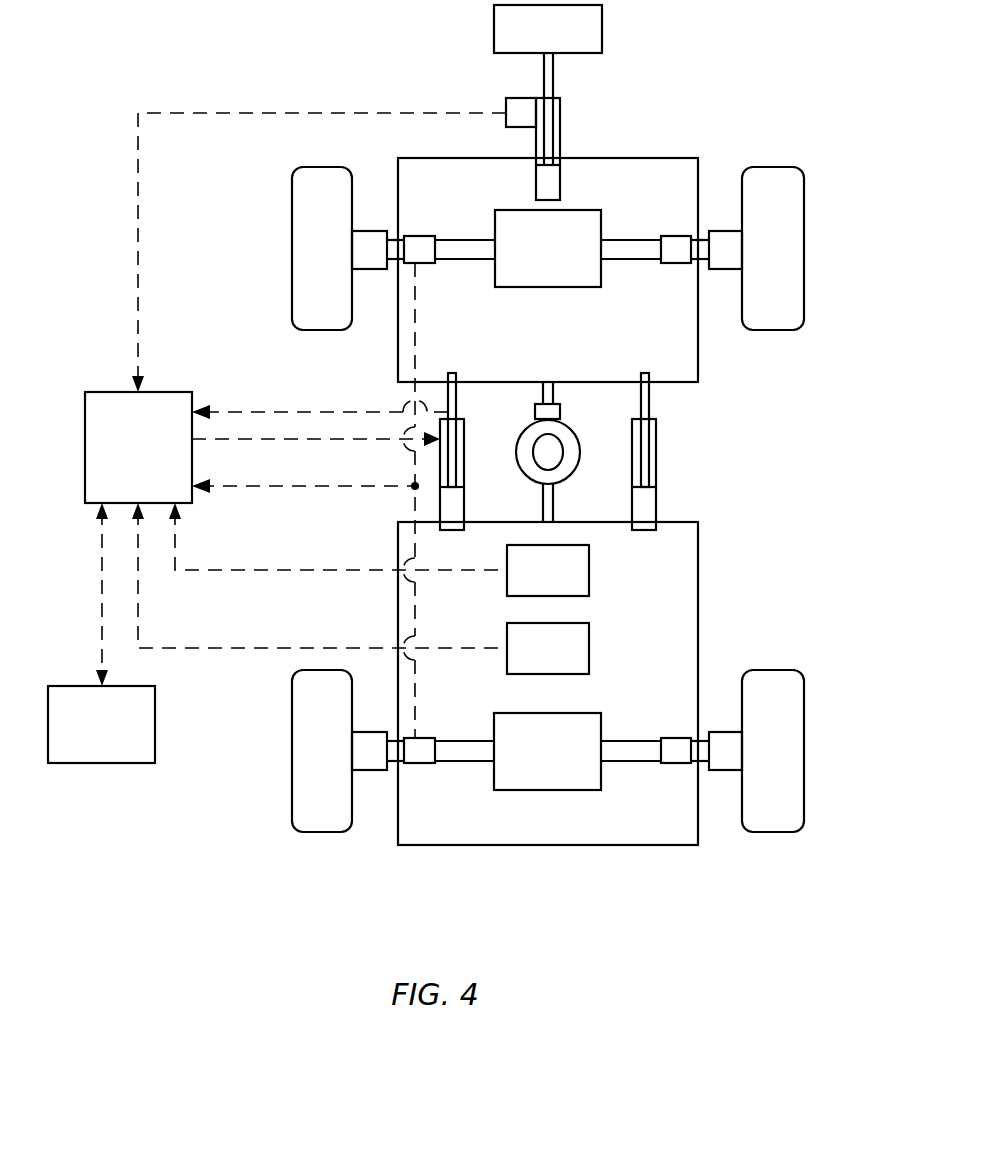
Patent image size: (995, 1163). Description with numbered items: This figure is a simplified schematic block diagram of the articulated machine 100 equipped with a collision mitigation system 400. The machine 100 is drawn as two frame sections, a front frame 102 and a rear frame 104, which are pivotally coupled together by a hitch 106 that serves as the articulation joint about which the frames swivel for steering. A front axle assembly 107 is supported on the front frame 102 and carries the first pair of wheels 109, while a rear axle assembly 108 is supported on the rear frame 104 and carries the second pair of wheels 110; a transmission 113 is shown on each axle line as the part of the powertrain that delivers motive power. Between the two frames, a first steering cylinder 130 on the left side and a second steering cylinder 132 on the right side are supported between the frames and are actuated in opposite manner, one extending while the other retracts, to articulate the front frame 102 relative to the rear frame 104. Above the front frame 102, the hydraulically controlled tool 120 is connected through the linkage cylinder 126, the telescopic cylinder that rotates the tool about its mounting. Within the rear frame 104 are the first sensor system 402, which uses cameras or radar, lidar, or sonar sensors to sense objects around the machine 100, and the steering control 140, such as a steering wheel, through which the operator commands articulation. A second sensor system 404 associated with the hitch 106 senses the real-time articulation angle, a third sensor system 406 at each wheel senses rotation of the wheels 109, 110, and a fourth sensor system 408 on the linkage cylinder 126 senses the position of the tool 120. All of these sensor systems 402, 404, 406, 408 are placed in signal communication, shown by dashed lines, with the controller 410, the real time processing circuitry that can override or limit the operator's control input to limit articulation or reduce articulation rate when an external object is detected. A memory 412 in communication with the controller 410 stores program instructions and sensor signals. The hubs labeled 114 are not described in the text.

The machine 100 is at (748, 84).
The front frame 102 is at (690, 361).
The rear frame 104 is at (698, 605).
The hitch 106 is at (568, 450).
The front axle assembly 107 is at (628, 248).
The rear axle assembly 108 is at (632, 755).
The first pair of wheels 109 is at (302, 245).
The second pair of wheels 110 is at (303, 752).
The transmission 113 is at (547, 500).
The wheel hubs 114 is at (367, 230).
The hydraulically controlled tool 120 is at (548, 29).
The linkage cylinder 126 is at (553, 81).
The first steering cylinder 130 is at (438, 475).
The second steering cylinder 132 is at (658, 449).
The steering control 140 is at (548, 648).
The collision mitigation system 400 is at (100, 336).
The first sensor system 402 is at (548, 570).
The second sensor system 404 is at (560, 410).
The third sensor system 406 is at (422, 235).
The fourth sensor system 408 is at (518, 100).
The controller 410 is at (138, 447).
The memory 412 is at (101, 724).